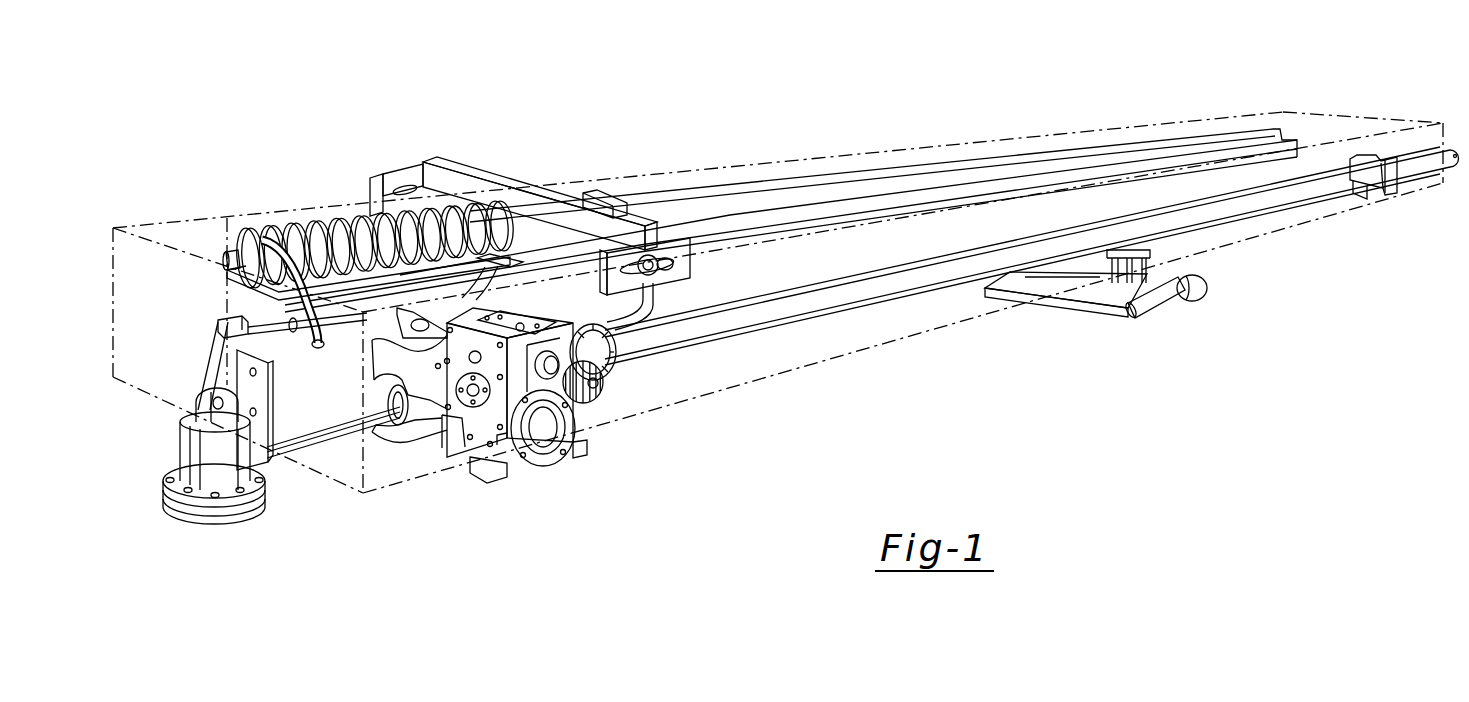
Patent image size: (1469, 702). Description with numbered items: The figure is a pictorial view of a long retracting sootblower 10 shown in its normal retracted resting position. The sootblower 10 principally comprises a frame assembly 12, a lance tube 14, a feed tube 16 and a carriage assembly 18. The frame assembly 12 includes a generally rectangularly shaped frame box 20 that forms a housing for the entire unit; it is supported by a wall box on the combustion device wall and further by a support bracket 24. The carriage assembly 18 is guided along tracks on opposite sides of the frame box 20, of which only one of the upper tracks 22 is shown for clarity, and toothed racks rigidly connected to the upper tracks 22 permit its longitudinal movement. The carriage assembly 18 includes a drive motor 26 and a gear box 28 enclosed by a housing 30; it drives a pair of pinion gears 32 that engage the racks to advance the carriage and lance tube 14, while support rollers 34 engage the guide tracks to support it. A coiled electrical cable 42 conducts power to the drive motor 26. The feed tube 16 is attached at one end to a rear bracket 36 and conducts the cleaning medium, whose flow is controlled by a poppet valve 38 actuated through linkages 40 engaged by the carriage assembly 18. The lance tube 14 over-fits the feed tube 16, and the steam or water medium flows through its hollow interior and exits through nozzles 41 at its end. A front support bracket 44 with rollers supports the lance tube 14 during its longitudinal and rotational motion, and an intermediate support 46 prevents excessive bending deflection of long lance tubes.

The sootblower 10 is at (598, 165).
The frame assembly 12 is at (532, 172).
The lance tube 14 is at (1250, 220).
The feed tube 16 is at (318, 445).
The carriage assembly 18 is at (517, 466).
The frame box 20 is at (791, 271).
The upper tracks 22 is at (230, 303).
The support bracket 24 is at (447, 180).
The drive motor 26 is at (612, 372).
The gear box 28 is at (570, 453).
The housing 30 is at (455, 440).
The pinion gears 32 is at (630, 333).
The support rollers 34 is at (600, 395).
The rear bracket 36 is at (247, 382).
The poppet valve 38 is at (190, 450).
The linkages 40 is at (212, 337).
The nozzles 41 is at (1458, 167).
The coiled electrical cable 42 is at (330, 225).
The front support bracket 44 is at (1390, 194).
The intermediate support 46 is at (1167, 303).